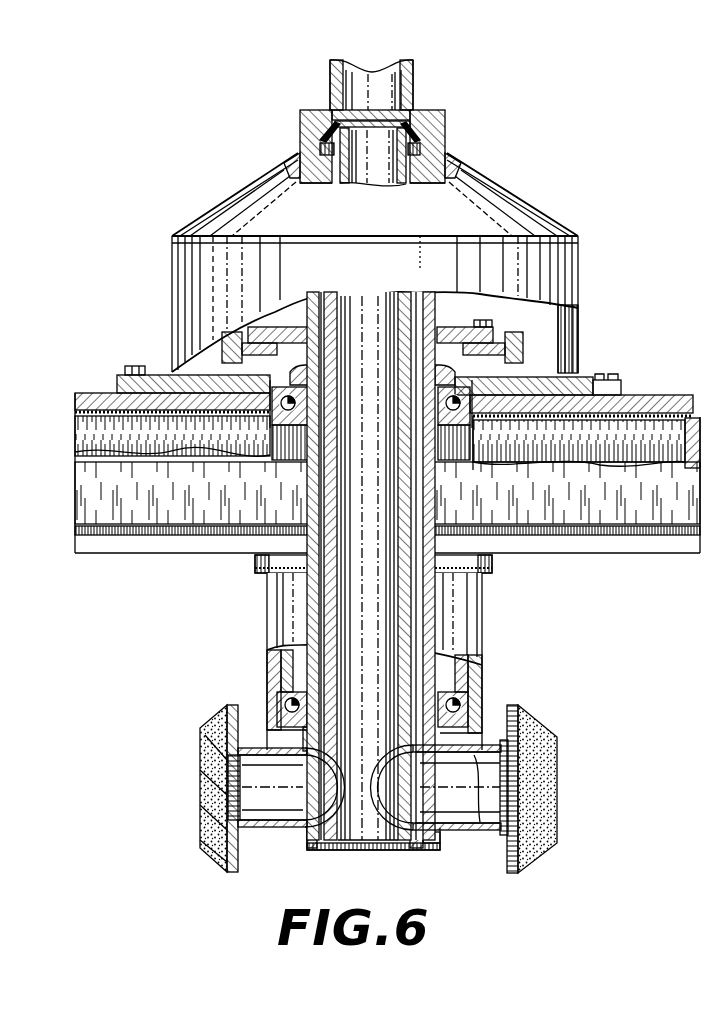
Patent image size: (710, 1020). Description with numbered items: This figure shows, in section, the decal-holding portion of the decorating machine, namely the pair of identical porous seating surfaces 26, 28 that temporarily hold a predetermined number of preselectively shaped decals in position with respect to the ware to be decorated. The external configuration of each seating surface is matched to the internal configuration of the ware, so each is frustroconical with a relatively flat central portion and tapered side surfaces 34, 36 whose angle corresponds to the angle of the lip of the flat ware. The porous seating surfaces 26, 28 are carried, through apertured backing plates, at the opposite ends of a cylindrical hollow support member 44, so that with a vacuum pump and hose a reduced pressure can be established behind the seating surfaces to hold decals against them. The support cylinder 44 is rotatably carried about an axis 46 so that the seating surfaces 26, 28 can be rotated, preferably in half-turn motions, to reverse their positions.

The porous seating surface 26 is at (200, 800).
The porous seating surface 28 is at (558, 795).
The tapered side surface 34 is at (238, 706).
The tapered side surface 36 is at (512, 706).
The cylindrical hollow support member 44 is at (274, 827).
The axis 46 is at (386, 850).